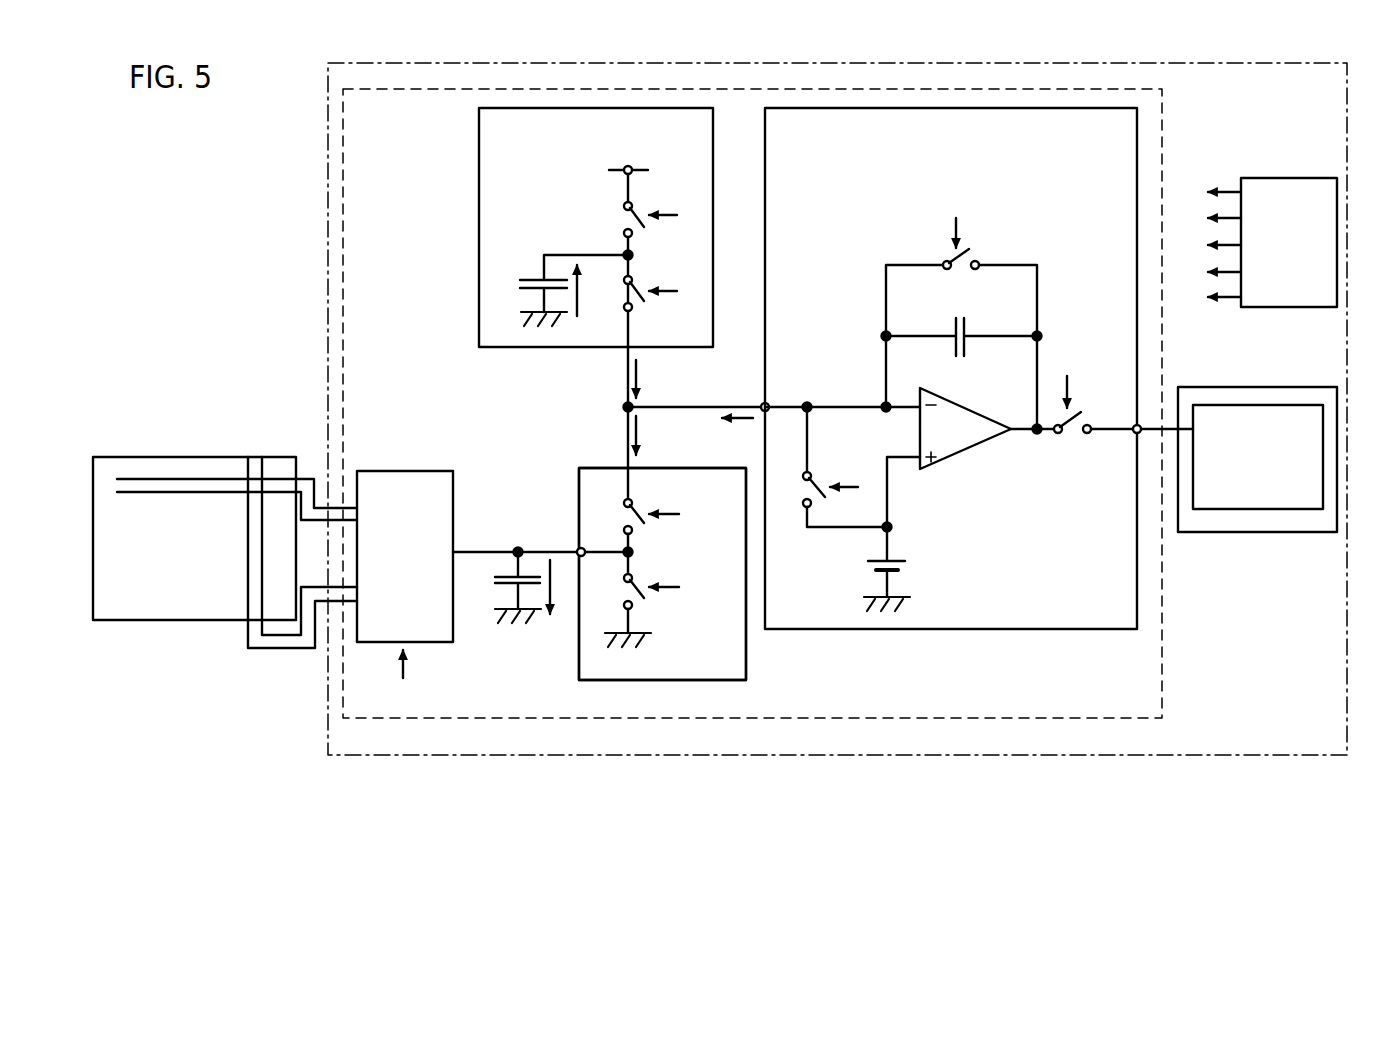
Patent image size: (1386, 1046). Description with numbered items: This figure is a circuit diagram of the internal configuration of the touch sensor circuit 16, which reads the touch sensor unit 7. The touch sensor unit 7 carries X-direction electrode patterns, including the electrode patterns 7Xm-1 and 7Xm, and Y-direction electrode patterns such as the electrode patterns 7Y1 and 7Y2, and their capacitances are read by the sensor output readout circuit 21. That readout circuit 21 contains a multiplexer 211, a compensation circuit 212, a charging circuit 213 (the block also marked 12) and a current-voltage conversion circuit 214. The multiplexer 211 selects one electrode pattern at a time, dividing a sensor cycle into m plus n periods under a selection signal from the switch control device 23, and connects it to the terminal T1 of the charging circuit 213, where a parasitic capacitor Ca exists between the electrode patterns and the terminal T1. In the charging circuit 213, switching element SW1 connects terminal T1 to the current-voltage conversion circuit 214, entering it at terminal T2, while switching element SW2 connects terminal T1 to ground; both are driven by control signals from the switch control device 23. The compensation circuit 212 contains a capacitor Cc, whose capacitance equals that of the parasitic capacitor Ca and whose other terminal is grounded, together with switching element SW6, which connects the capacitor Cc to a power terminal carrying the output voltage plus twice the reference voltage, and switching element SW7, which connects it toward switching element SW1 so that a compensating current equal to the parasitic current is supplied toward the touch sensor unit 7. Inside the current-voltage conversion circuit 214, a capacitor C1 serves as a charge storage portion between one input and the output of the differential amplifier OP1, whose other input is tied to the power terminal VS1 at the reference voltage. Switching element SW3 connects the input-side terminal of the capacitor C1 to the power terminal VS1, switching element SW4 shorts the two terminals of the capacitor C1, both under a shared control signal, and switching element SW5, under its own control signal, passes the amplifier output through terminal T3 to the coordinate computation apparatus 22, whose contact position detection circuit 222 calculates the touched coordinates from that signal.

The touch sensor unit 7 is at (183, 457).
The electrode pattern 7Y1 is at (150, 676).
The electrode pattern 7Y2 is at (237, 599).
The electrode pattern 7Xm-1 is at (248, 462).
The electrode pattern 7Xm is at (262, 462).
The charging circuit 12 is at (579, 491).
The touch sensor circuit 16 is at (1180, 63).
The sensor output readout circuit 21 is at (1120, 67).
The coordinate computation apparatus 22 is at (1276, 387).
The switch control device 23 is at (1310, 178).
The multiplexer 211 is at (405, 471).
The compensation circuit 212 is at (512, 108).
The charging circuit 213 is at (717, 681).
The current-voltage conversion circuit 214 is at (810, 108).
The contact position detection circuit 222 is at (1273, 510).
The terminal T1 is at (578, 550).
The second terminal T2 is at (764, 403).
The terminal T3 is at (1140, 437).
The switching element SW1 is at (644, 509).
The switching element SW2 is at (644, 575).
The switching element SW3 is at (826, 471).
The switching element SW4 is at (980, 259).
The switching element SW5 is at (1090, 425).
The switching element SW6 is at (641, 205).
The switching element SW7 is at (641, 280).
The capacitor C1 is at (955, 316).
The parasitic capacitor Ca is at (494, 579).
The capacitor Cc is at (521, 283).
The differential amplifier OP1 is at (958, 454).
The power terminal VS1 is at (912, 571).